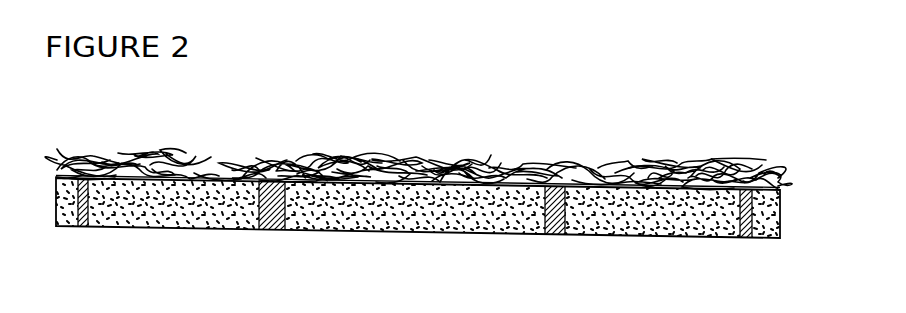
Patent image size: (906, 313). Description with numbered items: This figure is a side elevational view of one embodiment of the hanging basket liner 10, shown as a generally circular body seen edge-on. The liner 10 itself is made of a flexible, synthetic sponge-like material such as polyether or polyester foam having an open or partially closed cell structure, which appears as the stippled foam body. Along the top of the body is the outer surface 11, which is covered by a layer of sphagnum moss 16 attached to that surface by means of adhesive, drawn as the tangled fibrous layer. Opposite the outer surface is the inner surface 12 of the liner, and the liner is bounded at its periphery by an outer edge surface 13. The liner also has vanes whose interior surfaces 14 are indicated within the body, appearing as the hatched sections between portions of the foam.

The hanging basket liner 10 is at (786, 215).
The outer surface 11 is at (620, 158).
The inner surface 12 is at (633, 238).
The outer edge surface 13 is at (434, 213).
The interior surfaces of the vanes 14 is at (276, 226).
The layer of sphagnum moss 16 is at (333, 153).